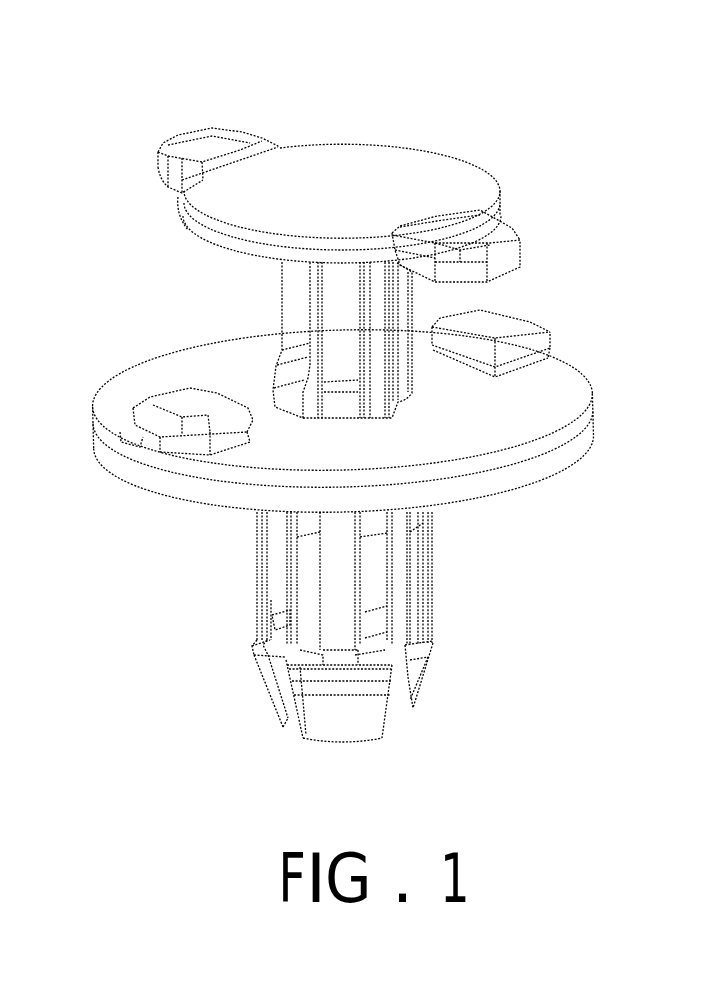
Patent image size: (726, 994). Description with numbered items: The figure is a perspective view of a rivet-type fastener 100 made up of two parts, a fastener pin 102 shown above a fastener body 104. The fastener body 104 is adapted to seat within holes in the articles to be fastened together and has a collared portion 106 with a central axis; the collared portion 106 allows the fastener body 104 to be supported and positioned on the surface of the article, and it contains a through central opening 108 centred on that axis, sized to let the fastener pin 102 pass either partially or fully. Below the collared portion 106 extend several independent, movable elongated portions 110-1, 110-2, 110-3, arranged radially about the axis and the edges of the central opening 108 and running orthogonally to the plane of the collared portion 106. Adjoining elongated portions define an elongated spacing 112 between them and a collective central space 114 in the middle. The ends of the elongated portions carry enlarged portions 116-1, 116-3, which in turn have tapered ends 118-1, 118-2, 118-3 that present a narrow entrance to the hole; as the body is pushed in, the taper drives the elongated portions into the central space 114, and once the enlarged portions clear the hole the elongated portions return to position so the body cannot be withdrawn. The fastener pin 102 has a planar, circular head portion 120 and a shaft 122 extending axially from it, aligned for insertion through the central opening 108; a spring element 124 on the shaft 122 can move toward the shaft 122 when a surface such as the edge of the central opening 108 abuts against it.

The rivet-type fastener 100 is at (160, 77).
The fastener pin 102 is at (494, 142).
The fastener body 104 is at (548, 535).
The collared portion 106 is at (557, 408).
The central opening 108 is at (389, 414).
The elongated portion 110-1 is at (265, 545).
The elongated portion 110-2 is at (340, 583).
The elongated portion 110-3 is at (423, 550).
The elongated spacing 112 is at (288, 707).
The central space 114 is at (377, 768).
The enlarged portion 116-1 is at (262, 661).
The enlarged portion 116-3 is at (433, 657).
The tapered end 118-1 is at (272, 698).
The tapered end 118-2 is at (338, 708).
The tapered end 118-3 is at (422, 692).
The head portion 120 is at (205, 198).
The shaft 122 is at (355, 348).
The spring element 124 is at (403, 303).